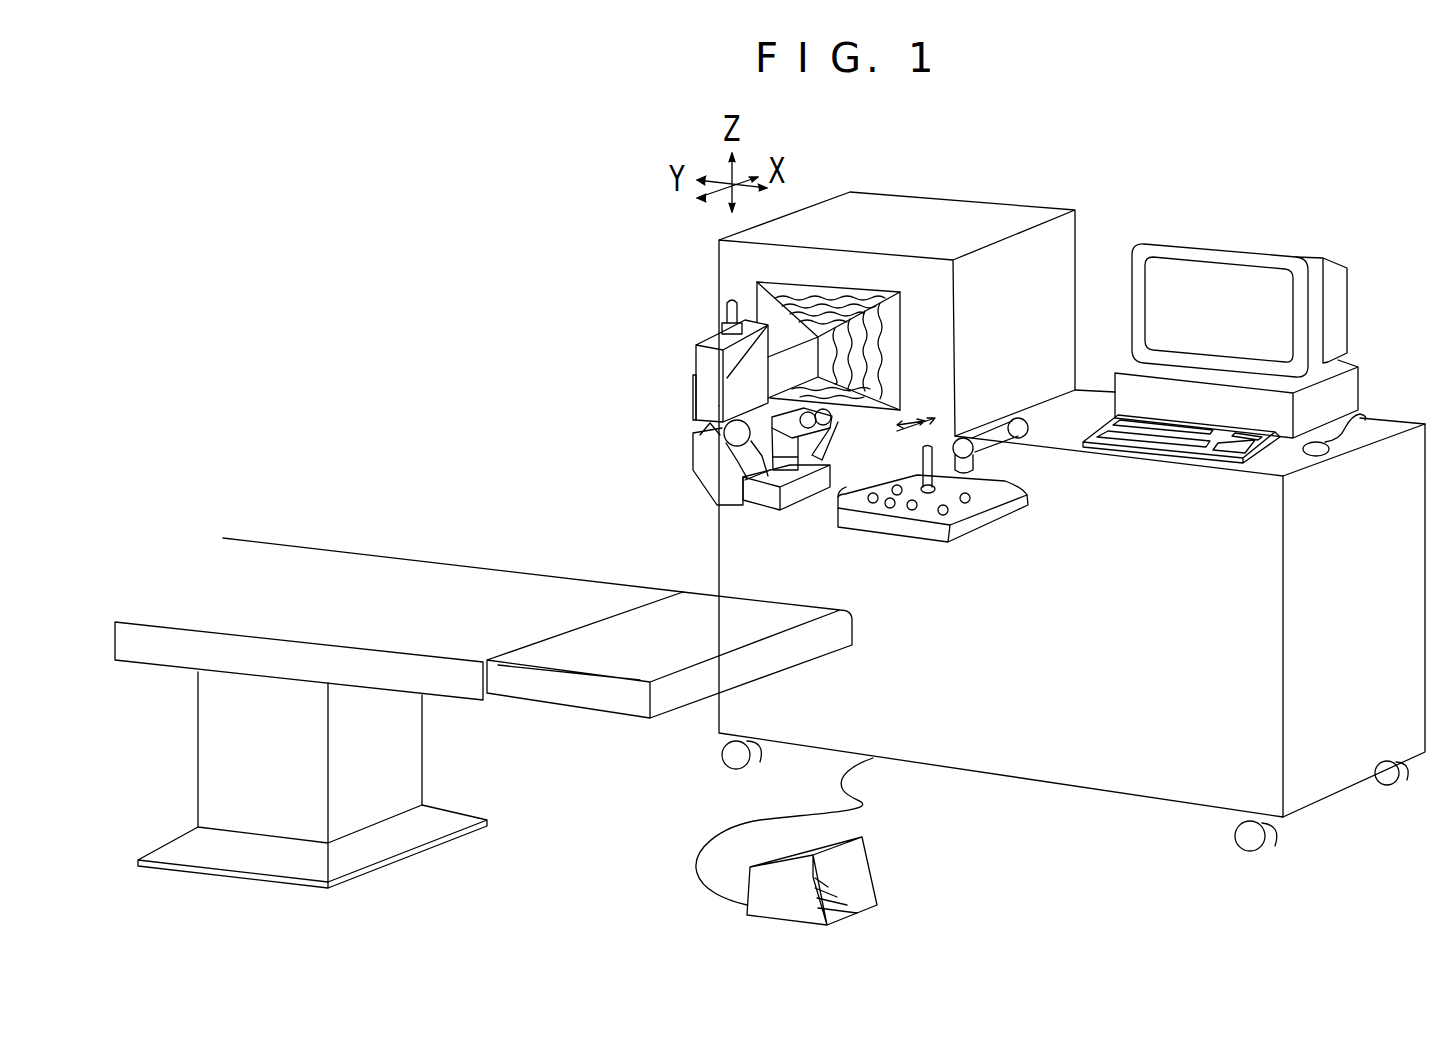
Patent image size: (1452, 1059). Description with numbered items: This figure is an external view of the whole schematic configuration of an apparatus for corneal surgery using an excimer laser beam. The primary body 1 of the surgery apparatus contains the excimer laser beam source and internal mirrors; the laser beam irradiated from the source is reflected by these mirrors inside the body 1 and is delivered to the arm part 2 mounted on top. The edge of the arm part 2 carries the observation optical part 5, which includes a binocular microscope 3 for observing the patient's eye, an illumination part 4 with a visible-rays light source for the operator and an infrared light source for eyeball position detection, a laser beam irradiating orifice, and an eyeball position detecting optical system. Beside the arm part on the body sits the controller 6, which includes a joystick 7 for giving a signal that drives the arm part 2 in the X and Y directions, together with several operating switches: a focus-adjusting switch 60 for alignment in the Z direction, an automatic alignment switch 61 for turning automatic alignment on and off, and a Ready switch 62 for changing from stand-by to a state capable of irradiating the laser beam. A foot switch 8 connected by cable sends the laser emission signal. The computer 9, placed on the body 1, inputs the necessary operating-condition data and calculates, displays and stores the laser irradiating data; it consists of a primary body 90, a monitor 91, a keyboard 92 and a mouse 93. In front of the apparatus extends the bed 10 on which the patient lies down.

The primary body of surgery apparatus 1 is at (1168, 758).
The arm part 2 is at (787, 340).
The binocular microscope 3 is at (745, 456).
The illumination part 4 is at (812, 443).
The observation optical part 5 is at (656, 386).
The controller 6 is at (954, 474).
The focus-adjusting switch 60 is at (843, 492).
The automatic alignment switch 61 is at (968, 503).
The Ready switch 62 is at (941, 515).
The joystick 7 is at (935, 455).
The foot switch 8 is at (852, 863).
The computer 9 is at (1258, 328).
The primary body 90 is at (1338, 395).
The monitor 91 is at (1243, 292).
The keyboard 92 is at (1187, 441).
The mouse 93 is at (1320, 455).
The bed 10 is at (372, 797).